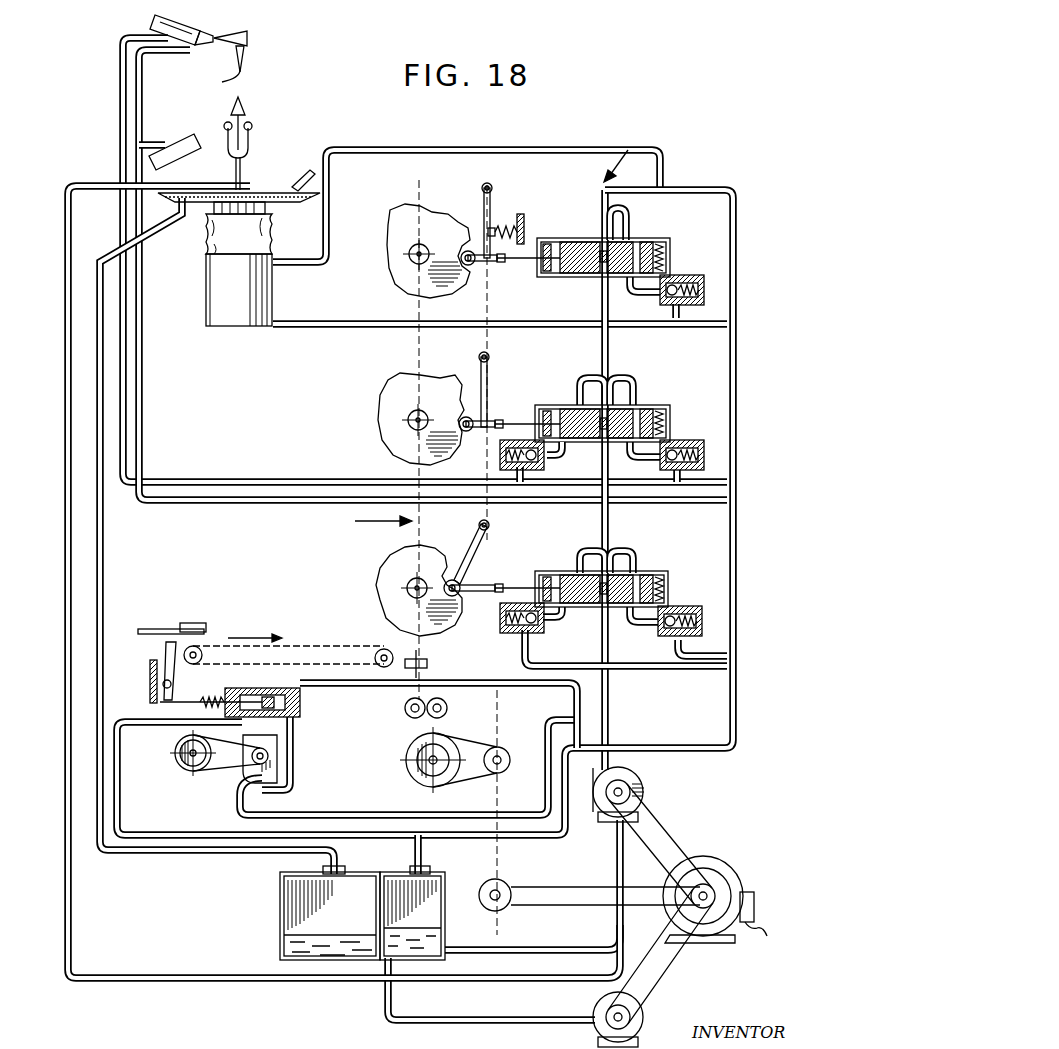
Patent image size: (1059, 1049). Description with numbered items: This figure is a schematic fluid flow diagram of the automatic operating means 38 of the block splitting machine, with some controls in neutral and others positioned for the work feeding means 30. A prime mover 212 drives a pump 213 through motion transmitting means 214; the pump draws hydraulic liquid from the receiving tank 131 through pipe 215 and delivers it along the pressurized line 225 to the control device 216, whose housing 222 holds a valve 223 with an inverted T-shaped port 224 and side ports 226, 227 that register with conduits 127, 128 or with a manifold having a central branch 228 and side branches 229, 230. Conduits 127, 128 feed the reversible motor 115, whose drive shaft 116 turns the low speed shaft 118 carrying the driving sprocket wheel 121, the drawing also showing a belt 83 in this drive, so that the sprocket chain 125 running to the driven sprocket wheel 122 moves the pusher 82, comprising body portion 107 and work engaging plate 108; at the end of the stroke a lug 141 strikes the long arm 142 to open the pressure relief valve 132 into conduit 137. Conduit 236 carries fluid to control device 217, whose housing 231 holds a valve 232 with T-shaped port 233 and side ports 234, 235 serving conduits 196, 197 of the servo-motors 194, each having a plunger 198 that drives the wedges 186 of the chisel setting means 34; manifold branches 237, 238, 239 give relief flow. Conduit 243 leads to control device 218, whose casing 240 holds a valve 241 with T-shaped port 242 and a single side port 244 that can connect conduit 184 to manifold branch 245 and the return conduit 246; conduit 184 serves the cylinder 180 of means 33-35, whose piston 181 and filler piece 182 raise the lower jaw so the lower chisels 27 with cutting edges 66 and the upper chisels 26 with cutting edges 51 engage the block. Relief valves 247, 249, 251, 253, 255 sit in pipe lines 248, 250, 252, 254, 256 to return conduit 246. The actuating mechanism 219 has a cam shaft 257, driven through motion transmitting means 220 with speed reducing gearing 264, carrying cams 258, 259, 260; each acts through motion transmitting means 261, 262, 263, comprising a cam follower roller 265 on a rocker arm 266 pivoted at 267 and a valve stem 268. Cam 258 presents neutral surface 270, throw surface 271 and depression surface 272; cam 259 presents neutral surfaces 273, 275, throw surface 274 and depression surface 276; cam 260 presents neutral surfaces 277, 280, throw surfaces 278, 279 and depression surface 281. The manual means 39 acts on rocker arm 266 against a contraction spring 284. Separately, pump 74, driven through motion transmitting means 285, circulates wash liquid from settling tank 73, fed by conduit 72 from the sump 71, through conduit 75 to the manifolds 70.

The means to set the chisels 34 is at (152, 26).
The servo-motor 194 is at (168, 22).
The wedge 186 is at (232, 36).
The upper chisels 26 is at (243, 57).
The conduit 196 is at (122, 82).
The conduit 197 is at (140, 81).
The plunger 198 is at (207, 41).
The cutting edges 51 is at (220, 81).
The cutting edge 66 is at (241, 108).
The lower chisels 27 is at (250, 118).
The manifold 70 is at (225, 125).
The sump 71 is at (298, 182).
The filler piece 182 is at (268, 208).
The piston 181 is at (271, 232).
The conduit 72 is at (135, 240).
The means to initially engage chisels, set chisels and split work piece 33-35 is at (338, 304).
The cylinder 180 is at (207, 300).
The conduit 184 is at (300, 328).
The pivot 267 is at (490, 165).
The means to automatically operate 38 is at (653, 147).
The return conduit 246 is at (690, 188).
The short neutral surface 280 is at (420, 208).
The throw surface 278 is at (440, 208).
The throw surface 279 is at (390, 222).
The depression surface 281 is at (390, 255).
The motion transmitting means 263 is at (494, 190).
The means to selectively raise the lower jaw 39 is at (568, 197).
The contraction spring 284 is at (500, 220).
The rocker arm 266 is at (535, 206).
The cam follower roller 265 is at (468, 268).
The valve stem 268 is at (536, 260).
The cam 260 is at (395, 280).
The long neutral surface 277 is at (406, 286).
The manifold branch 245 is at (619, 220).
The side transverse port 244 is at (647, 246).
The control device 218 is at (672, 242).
The casing 240 is at (668, 270).
The valve 241 is at (556, 276).
The T-shaped transverse port 242 is at (600, 278).
The valve 255 is at (705, 290).
The pipe line 256 is at (720, 328).
The conduit 243 is at (600, 338).
The side branch 238 is at (588, 380).
The central branch 239 is at (612, 380).
The side branch 237 is at (632, 392).
The side transverse port 234 is at (642, 410).
The side transverse port 235 is at (565, 408).
The valve 232 is at (540, 420).
The control device 217 is at (672, 412).
The housing 231 is at (670, 430).
The valve 251 is at (705, 455).
The T-shaped transverse port 233 is at (622, 462).
The pipe line 252 is at (720, 486).
The conduit 236 is at (610, 510).
The pipe line 254 is at (718, 524).
The valve 253 is at (500, 458).
The throw surface 274 is at (432, 372).
The short neutral surface 275 is at (394, 380).
The depression surface 276 is at (386, 404).
The cam 259 is at (396, 442).
The long neutral surface 273 is at (420, 460).
The motion transmitting means 262 is at (480, 362).
The actuating mechanism 219 is at (355, 532).
The motion transmitting means 261 is at (478, 530).
The neutral surface 270 is at (398, 556).
The depression surface 272 is at (455, 578).
The cam 258 is at (380, 582).
The throw surface 271 is at (450, 620).
The transverse port 227 is at (536, 582).
The central branch 228 is at (588, 562).
The side branch 229 is at (628, 562).
The side branch 230 is at (588, 570).
The valve 223 is at (540, 589).
The control device 216 is at (665, 575).
The transverse port 226 is at (668, 578).
The housing 222 is at (668, 600).
The valve 247 is at (705, 615).
The pipe line 248 is at (712, 650).
The T-shaped transverse port 224 is at (560, 620).
The valve 249 is at (535, 645).
The pipe line 250 is at (530, 666).
The cam shaft 257 is at (418, 660).
The means to move and support the work pieces 30 is at (190, 594).
The work engaging plate 108 is at (152, 628).
The body portion 107 is at (197, 630).
The pusher 82 is at (232, 634).
The sprocket chain 125 is at (306, 646).
The driven sprocket wheel 122 is at (378, 650).
The driving sprocket wheel 121 is at (197, 664).
The lug 141 is at (165, 645).
The long arm 142 is at (152, 670).
The pressure relief valve 132 is at (284, 690).
The reversible motor 115 is at (270, 735).
The drive shaft 116 is at (268, 757).
The low speed driven shaft 118 is at (176, 757).
The belt 83 is at (183, 772).
The conduit 127 is at (293, 757).
The conduit 128 is at (318, 810).
The conduit 137 is at (158, 833).
The motion transmitting means 220 is at (516, 727).
The speed reducing gearing 264 is at (438, 788).
The pressurized line 225 is at (604, 724).
The pump 213 is at (644, 782).
The motion transmitting means 214 is at (670, 832).
The prime mover 212 is at (718, 866).
The settling tank 73 is at (280, 910).
The receiving tank 131 is at (445, 890).
The pipe 215 is at (512, 948).
The motion transmitting means 285 is at (672, 968).
The pump 74 is at (645, 1010).
The conduit 75 is at (455, 1024).